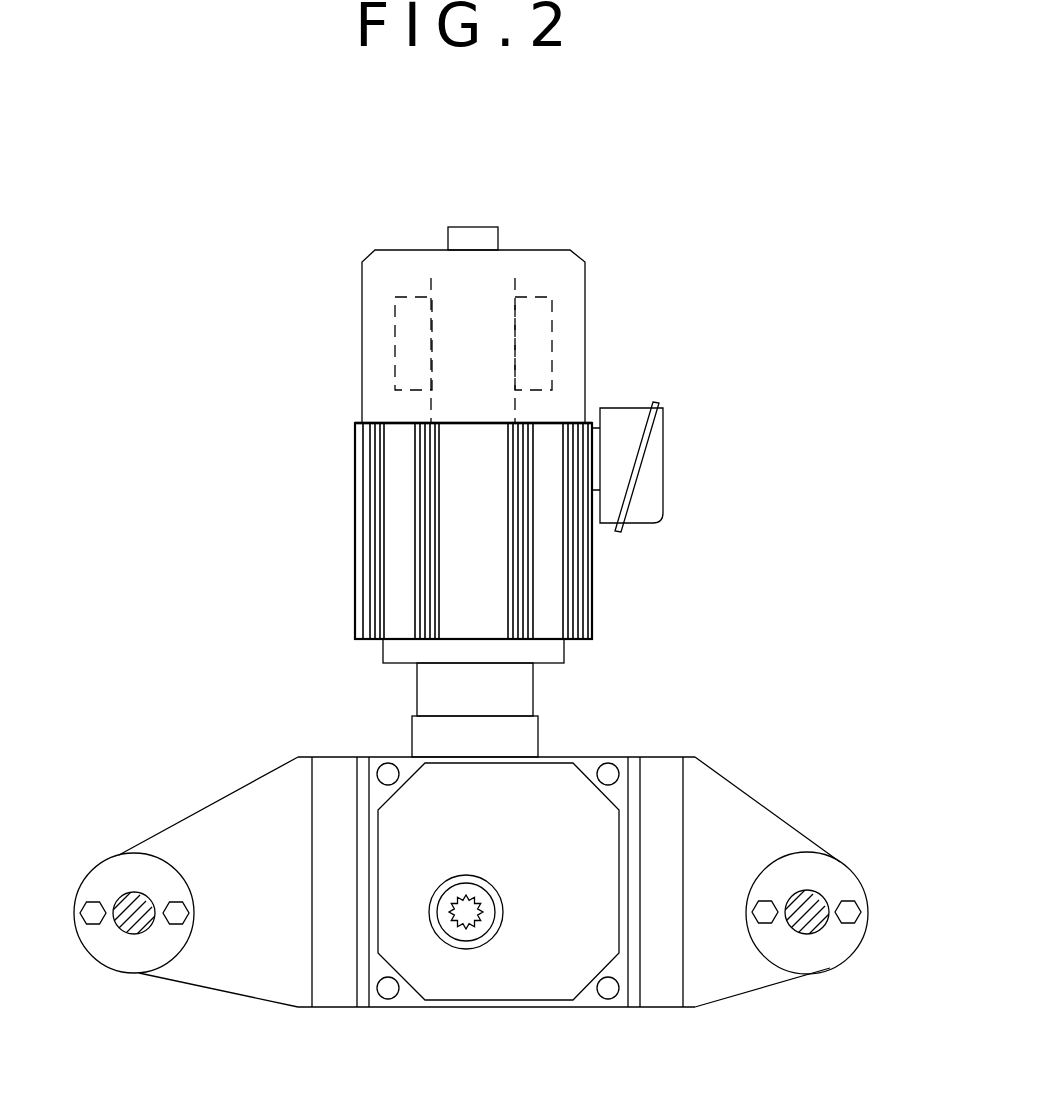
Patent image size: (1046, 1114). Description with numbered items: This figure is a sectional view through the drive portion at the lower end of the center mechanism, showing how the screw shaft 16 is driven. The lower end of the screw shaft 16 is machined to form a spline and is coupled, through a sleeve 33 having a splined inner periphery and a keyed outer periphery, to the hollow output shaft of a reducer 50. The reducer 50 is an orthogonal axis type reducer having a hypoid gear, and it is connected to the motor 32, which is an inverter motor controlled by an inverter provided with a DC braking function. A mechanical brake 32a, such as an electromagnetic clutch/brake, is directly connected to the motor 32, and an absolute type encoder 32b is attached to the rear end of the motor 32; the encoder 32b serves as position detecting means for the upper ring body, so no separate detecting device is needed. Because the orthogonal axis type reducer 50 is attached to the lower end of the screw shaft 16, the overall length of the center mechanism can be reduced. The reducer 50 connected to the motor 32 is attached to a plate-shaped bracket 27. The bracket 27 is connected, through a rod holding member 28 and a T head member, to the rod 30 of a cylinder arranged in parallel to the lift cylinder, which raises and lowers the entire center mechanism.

The screw shaft 16 is at (485, 938).
The bracket 27 is at (725, 800).
The rod holding member 28 is at (862, 858).
The rod 30 is at (102, 950).
The motor 32 is at (608, 356).
The mechanical brake 32a is at (533, 298).
The encoder 32b is at (474, 227).
The sleeve 33 is at (455, 932).
The reducer 50 is at (592, 757).